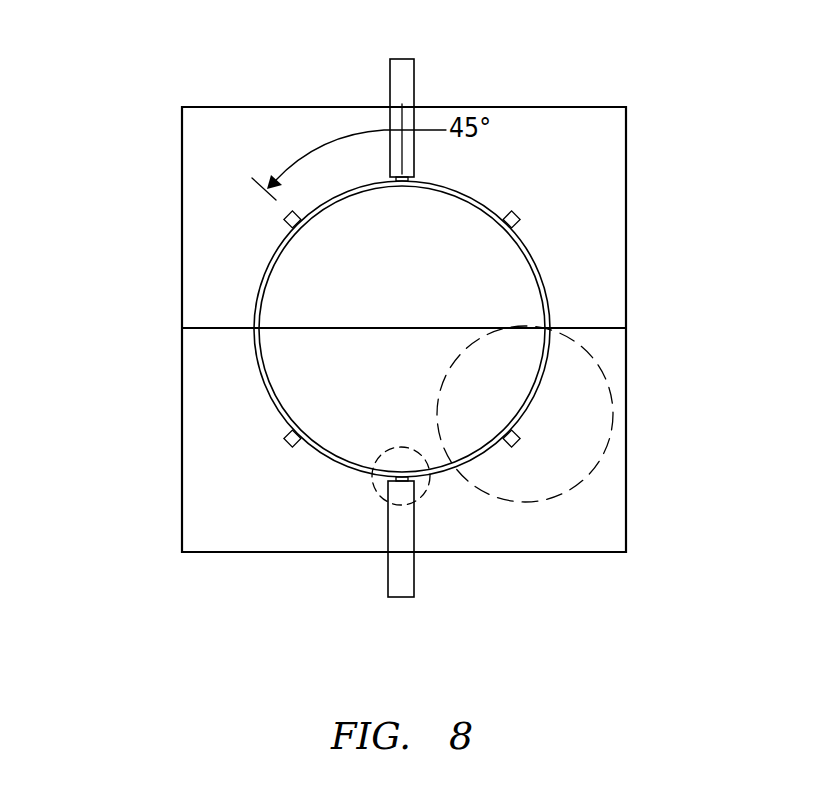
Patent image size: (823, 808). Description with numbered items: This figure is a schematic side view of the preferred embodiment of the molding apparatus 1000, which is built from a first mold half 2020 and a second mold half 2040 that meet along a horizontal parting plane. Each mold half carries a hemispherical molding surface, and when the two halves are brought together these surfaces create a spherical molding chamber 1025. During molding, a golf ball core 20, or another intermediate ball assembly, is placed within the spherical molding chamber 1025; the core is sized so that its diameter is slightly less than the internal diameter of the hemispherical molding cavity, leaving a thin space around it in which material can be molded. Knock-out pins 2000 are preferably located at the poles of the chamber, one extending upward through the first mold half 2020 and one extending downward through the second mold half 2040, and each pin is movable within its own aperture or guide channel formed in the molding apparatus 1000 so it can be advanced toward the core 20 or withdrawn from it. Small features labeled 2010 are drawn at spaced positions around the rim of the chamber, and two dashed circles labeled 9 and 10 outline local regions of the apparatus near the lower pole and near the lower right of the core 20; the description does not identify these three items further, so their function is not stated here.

The molding apparatus 1000 is at (401, 302).
The knock-out pins 2000 is at (405, 60).
The first mold half 2020 is at (627, 133).
The second mold half 2040 is at (627, 500).
The clamp pads 2010 is at (288, 222).
The golf ball core 20 is at (560, 322).
The spherical molding chamber 1025 is at (256, 329).
The detail region of FIG. 10 is at (613, 402).
The detail region of FIG. 9 is at (378, 495).